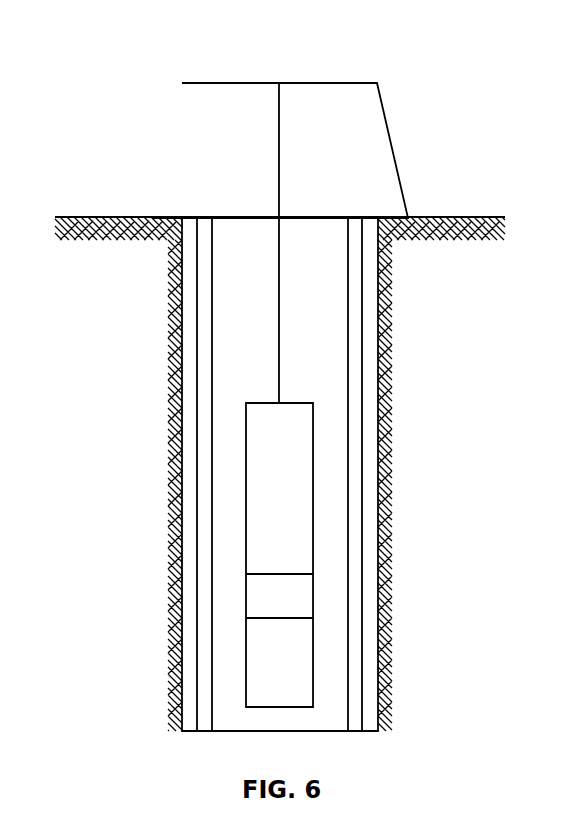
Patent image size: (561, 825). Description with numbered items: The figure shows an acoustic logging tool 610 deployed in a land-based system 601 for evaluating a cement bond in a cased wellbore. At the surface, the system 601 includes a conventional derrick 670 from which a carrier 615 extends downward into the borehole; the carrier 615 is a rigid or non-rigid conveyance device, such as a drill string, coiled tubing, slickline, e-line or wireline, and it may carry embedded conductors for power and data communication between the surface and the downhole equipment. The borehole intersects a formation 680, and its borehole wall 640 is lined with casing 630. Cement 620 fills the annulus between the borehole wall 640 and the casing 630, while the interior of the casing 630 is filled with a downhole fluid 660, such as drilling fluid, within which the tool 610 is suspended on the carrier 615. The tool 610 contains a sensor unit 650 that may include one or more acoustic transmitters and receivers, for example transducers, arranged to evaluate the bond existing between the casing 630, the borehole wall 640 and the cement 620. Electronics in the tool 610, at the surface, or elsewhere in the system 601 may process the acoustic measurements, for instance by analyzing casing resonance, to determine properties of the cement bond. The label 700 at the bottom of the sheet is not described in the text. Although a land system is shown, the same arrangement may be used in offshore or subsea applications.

The system 601 is at (372, 50).
The derrick 670 is at (165, 152).
The carrier 615 is at (279, 340).
The cement 620 is at (182, 330).
The casing 630 is at (203, 485).
The borehole wall 640 is at (181, 408).
The downhole fluid 660 is at (231, 392).
The formation 680 is at (158, 540).
The acoustic logging tool 610 is at (317, 478).
The sensor unit 650 is at (295, 608).
The reference to FIG. 7 700 is at (103, 824).